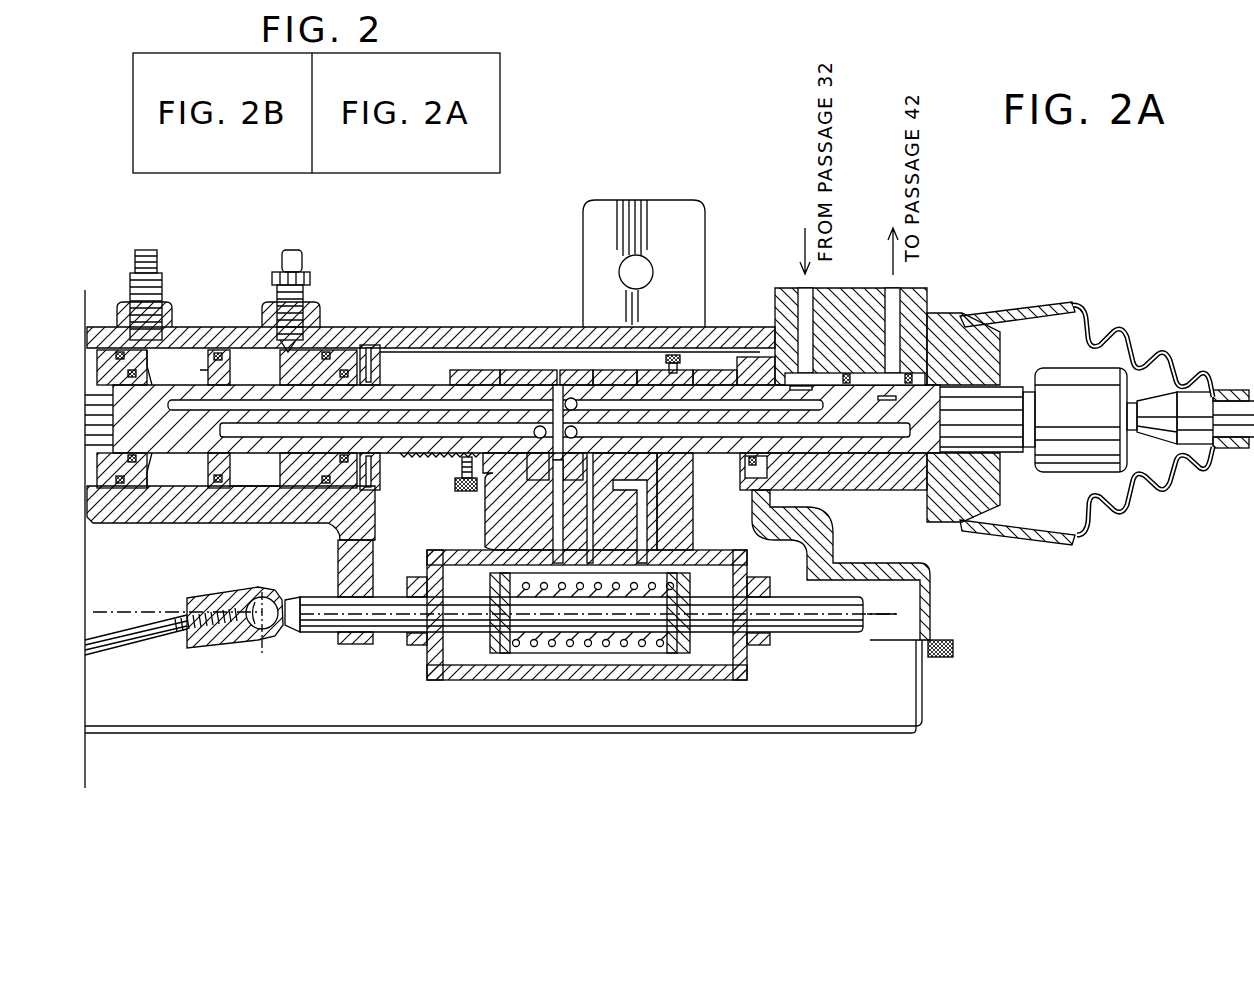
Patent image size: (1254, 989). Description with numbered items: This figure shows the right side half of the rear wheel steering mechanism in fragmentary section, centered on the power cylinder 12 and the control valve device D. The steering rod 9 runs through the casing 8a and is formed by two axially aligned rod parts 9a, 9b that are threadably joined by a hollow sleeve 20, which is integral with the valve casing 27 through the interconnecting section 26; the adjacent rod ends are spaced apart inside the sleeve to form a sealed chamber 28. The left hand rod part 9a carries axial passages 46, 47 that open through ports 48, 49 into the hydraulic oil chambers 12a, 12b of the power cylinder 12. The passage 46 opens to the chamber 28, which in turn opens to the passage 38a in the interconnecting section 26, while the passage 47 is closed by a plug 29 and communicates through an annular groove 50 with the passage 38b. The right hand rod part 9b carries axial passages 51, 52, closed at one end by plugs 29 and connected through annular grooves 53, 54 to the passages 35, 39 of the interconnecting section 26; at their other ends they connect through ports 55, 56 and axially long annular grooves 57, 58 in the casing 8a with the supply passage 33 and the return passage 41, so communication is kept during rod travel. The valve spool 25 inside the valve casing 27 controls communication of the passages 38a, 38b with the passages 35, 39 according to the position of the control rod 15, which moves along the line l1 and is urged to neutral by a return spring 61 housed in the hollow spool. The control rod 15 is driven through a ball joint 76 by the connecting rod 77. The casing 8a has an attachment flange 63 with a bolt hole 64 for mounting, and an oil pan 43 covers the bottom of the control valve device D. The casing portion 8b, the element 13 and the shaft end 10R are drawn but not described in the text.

The casing 8a is at (355, 330).
The lower housing section 8b is at (920, 585).
The rear wheel steering rod 9 is at (185, 465).
The left hand rod part 9a is at (388, 388).
The right hand rod part 9b is at (718, 385).
The right output shaft coupling 10R is at (1185, 410).
The power cylinder 12 is at (203, 534).
The hydraulic oil chamber 12a is at (195, 355).
The hydraulic oil chamber 12b is at (272, 358).
The seal ring 13 is at (225, 345).
The control rod 15 is at (315, 600).
The hollow sleeve 20 is at (483, 378).
The valve spool 25 is at (585, 680).
The interconnecting section 26 is at (678, 528).
The valve casing 27 is at (720, 680).
The chamber 28 is at (558, 385).
The plug 29 is at (575, 400).
The passage 33 is at (800, 303).
The passage 35 is at (588, 540).
The passage 38a is at (545, 523).
The passage 38b is at (500, 488).
The passage 39 is at (660, 490).
The passage 41 is at (895, 310).
The oil pan 43 is at (275, 733).
The axial passage 46 is at (242, 402).
The axial passage 47 is at (410, 440).
The port 48 is at (190, 378).
The port 49 is at (235, 455).
The annular groove 50 is at (525, 386).
The axial passage 51 is at (740, 405).
The axial passage 52 is at (863, 437).
The annular groove 53 is at (600, 386).
The annular groove 54 is at (617, 388).
The port 55 is at (805, 392).
The port 56 is at (893, 402).
The annular groove 57 is at (845, 374).
The annular groove 58 is at (908, 374).
The return spring 61 is at (545, 672).
The attachment flange 63 is at (705, 232).
The bolt hole 64 is at (653, 272).
The ball joint 76 is at (262, 600).
The connecting rod 77 is at (133, 642).
The control valve device D is at (741, 694).
The line l1 is at (135, 612).